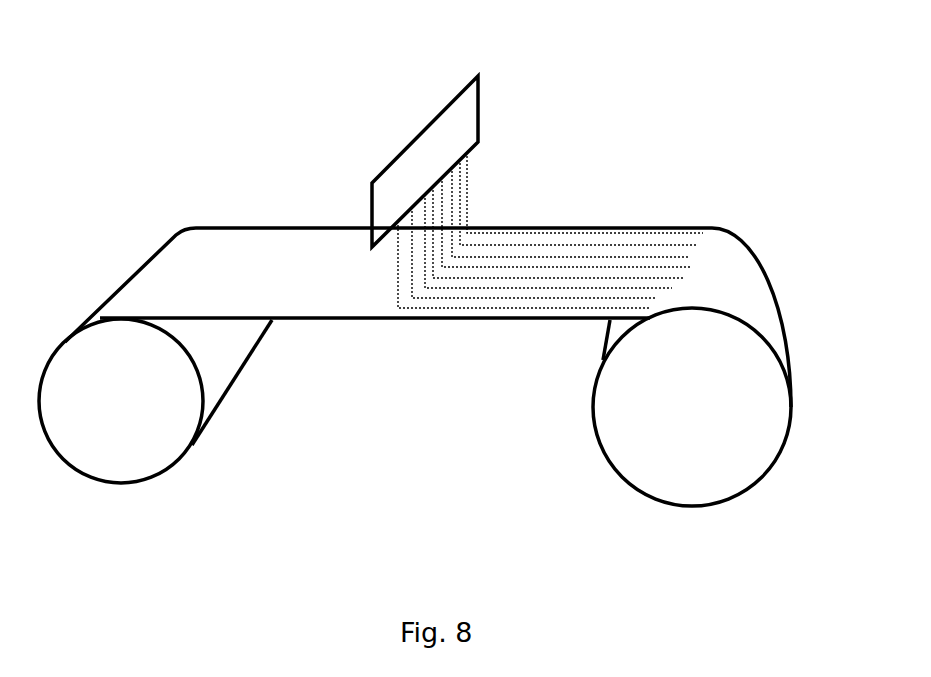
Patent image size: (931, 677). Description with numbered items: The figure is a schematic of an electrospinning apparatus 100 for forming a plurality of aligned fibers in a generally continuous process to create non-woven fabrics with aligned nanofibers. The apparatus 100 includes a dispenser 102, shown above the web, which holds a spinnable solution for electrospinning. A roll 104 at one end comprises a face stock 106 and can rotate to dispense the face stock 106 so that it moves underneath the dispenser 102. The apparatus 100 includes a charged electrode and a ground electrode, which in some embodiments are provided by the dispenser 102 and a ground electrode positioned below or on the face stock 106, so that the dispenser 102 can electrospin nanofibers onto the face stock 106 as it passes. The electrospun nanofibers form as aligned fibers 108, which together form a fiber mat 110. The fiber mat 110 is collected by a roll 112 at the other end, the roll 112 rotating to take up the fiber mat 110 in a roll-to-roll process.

The electrospinning apparatus 100 is at (309, 89).
The dispenser 102 is at (462, 120).
The roll 104 is at (160, 453).
The face stock 106 is at (255, 250).
The aligned fibers 108 is at (533, 255).
The fiber mat 110 is at (662, 227).
The roll 112 is at (708, 485).